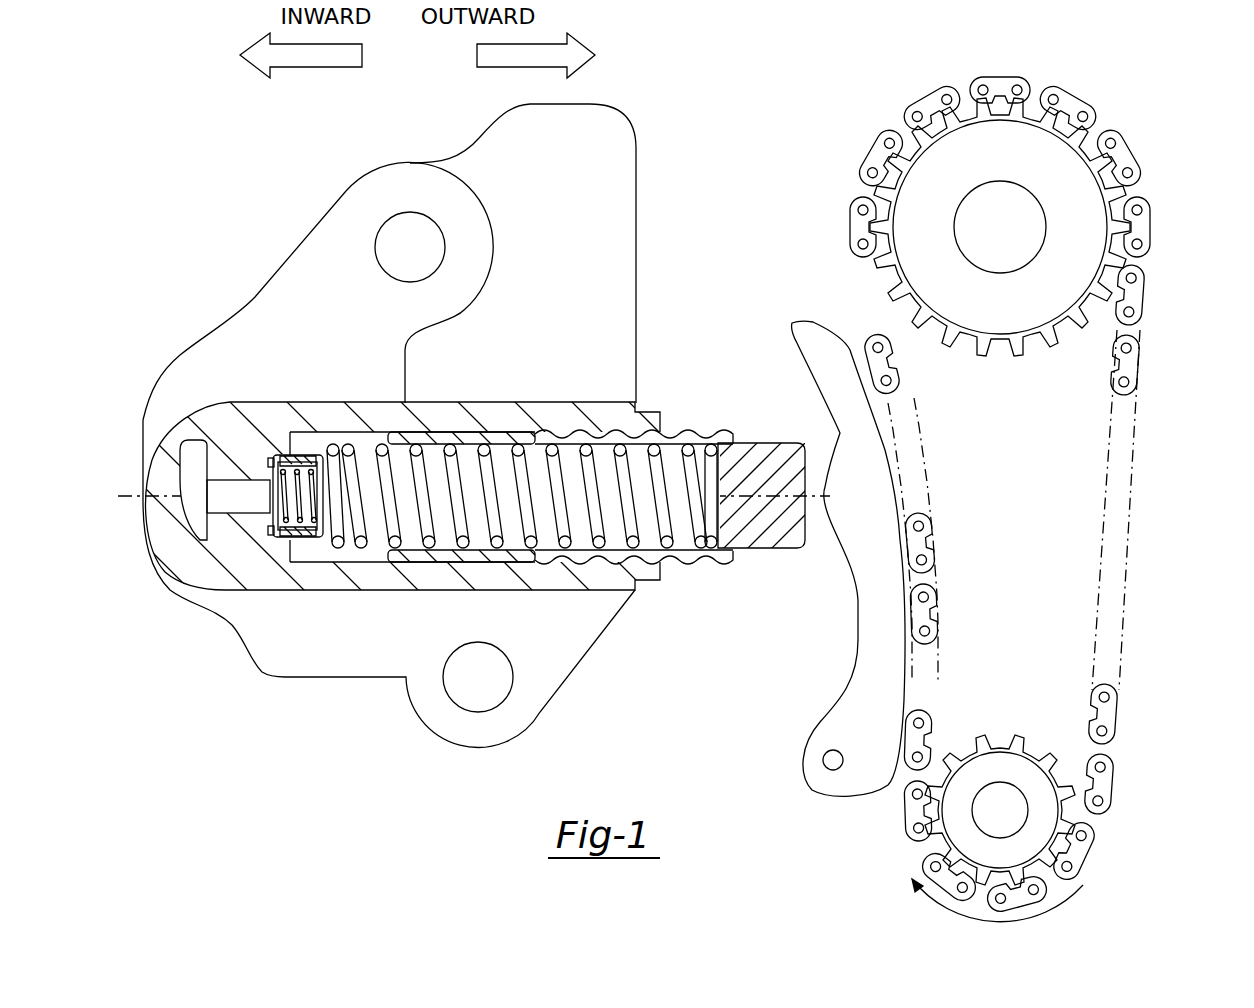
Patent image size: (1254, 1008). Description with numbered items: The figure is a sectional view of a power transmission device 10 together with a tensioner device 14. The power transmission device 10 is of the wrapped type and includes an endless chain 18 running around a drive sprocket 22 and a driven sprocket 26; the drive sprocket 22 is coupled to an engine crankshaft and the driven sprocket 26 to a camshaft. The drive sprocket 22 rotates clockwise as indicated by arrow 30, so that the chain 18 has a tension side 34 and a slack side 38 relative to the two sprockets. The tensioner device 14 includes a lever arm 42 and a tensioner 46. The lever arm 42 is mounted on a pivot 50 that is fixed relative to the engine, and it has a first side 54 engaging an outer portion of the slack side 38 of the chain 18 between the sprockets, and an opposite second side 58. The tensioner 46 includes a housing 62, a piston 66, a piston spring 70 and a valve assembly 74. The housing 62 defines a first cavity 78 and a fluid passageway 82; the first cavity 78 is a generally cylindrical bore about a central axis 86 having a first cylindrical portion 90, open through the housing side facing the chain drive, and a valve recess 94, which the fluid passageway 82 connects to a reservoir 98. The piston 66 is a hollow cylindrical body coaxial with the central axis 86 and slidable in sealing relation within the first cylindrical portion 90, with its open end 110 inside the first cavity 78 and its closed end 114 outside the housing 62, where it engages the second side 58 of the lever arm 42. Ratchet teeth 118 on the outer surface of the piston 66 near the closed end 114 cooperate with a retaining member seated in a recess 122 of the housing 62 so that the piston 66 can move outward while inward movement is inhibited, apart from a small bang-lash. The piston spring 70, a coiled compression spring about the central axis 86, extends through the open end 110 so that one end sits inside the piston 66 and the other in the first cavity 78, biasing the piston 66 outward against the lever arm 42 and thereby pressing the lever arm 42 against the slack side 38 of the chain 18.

The power transmission device 10 is at (1127, 677).
The tensioner device 14 is at (203, 160).
The chain 18 is at (1050, 495).
The drive sprocket 22 is at (1042, 830).
The driven sprocket 26 is at (1067, 203).
The arrow 30 is at (1057, 907).
The tension side 34 is at (1150, 304).
The slack side 38 is at (907, 543).
The lever arm 42 is at (818, 595).
The tensioner 46 is at (328, 690).
The pivot 50 is at (830, 764).
The first side 54 is at (908, 575).
The second side 58 is at (816, 520).
The housing 62 is at (270, 298).
The piston 66 is at (792, 452).
The piston spring 70 is at (536, 465).
The valve assembly 74 is at (243, 499).
The first cavity 78 is at (327, 553).
The fluid passageway 82 is at (245, 472).
The central axis 86 is at (697, 567).
The first cylindrical portion 90 is at (345, 556).
The valve recess 94 is at (285, 456).
The reservoir 98 is at (190, 460).
The open end 110 is at (400, 440).
The closed end 114 is at (797, 487).
The ratchet teeth 118 is at (677, 430).
The recess 122 is at (585, 430).